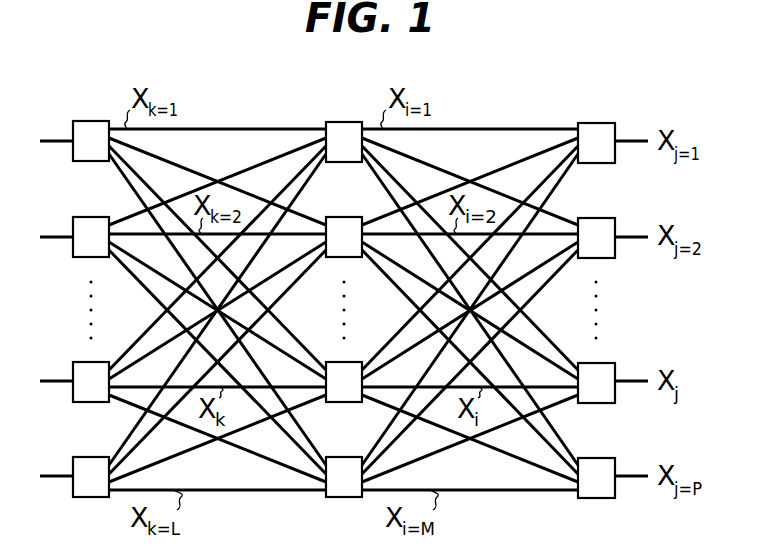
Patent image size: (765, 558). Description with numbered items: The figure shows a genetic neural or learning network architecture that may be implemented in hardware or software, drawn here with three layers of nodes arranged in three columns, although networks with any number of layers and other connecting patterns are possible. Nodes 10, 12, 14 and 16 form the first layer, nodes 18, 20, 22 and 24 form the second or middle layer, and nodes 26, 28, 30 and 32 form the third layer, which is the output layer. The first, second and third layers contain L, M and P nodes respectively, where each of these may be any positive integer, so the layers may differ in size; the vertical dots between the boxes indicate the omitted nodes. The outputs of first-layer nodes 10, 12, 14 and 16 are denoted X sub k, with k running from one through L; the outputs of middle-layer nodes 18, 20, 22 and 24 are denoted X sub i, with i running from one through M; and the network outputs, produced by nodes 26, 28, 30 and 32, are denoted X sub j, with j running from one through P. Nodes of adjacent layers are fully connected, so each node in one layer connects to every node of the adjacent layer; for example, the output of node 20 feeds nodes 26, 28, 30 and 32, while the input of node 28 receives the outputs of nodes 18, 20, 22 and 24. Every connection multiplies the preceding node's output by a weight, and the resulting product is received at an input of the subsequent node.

The node 10 is at (99, 121).
The node 12 is at (99, 217).
The node 14 is at (99, 362).
The node 16 is at (99, 457).
The node 18 is at (352, 122).
The node 20 is at (352, 217).
The node 22 is at (352, 362).
The node 24 is at (352, 457).
The node 26 is at (606, 123).
The node 28 is at (606, 218).
The node 30 is at (606, 363).
The node 32 is at (606, 458).